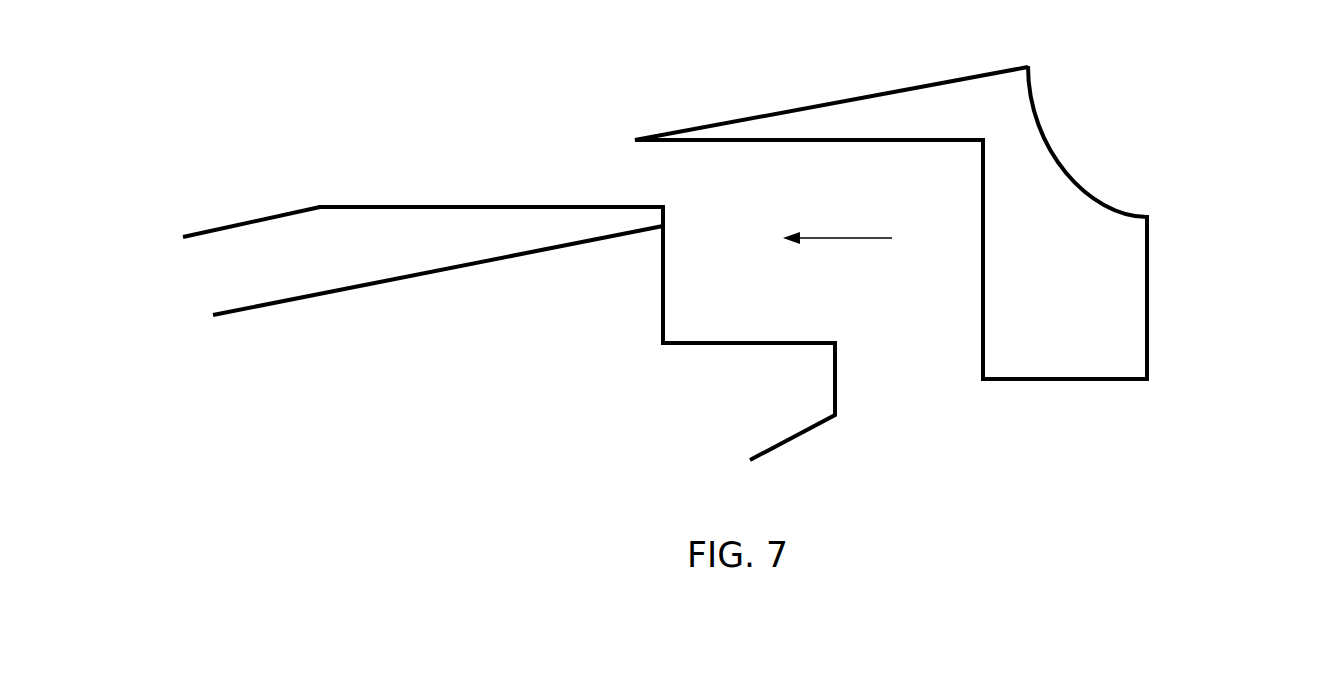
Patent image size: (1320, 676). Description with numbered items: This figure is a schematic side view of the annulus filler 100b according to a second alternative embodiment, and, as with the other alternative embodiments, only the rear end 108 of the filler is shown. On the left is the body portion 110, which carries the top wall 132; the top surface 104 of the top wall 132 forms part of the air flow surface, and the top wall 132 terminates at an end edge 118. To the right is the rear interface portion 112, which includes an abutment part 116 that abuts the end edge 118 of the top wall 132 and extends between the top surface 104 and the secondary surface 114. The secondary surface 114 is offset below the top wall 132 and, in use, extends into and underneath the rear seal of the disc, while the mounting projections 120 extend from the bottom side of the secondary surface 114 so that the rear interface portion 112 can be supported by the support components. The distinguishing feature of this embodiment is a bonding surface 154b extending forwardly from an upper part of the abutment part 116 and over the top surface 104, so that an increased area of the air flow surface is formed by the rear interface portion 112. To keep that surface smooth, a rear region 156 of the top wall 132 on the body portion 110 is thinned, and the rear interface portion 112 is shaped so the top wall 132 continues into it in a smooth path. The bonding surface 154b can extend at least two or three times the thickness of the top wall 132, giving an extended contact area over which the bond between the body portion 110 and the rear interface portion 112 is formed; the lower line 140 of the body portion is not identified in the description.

The annulus filler 100b is at (235, 157).
The top surface of the top wall 104 is at (217, 227).
The rear end 108 is at (1183, 392).
The body portion 110 is at (500, 386).
The rear interface portion 112 is at (1067, 257).
The secondary surface 114 is at (1123, 213).
The abutment part 116 is at (984, 320).
The end edge of the top wall 118 is at (664, 288).
The mounting projections 120 is at (1085, 302).
The top wall 132 is at (418, 230).
The lower surface 140 is at (318, 297).
The bonding surface 154b is at (827, 140).
The rear region of the top wall 156 is at (555, 206).